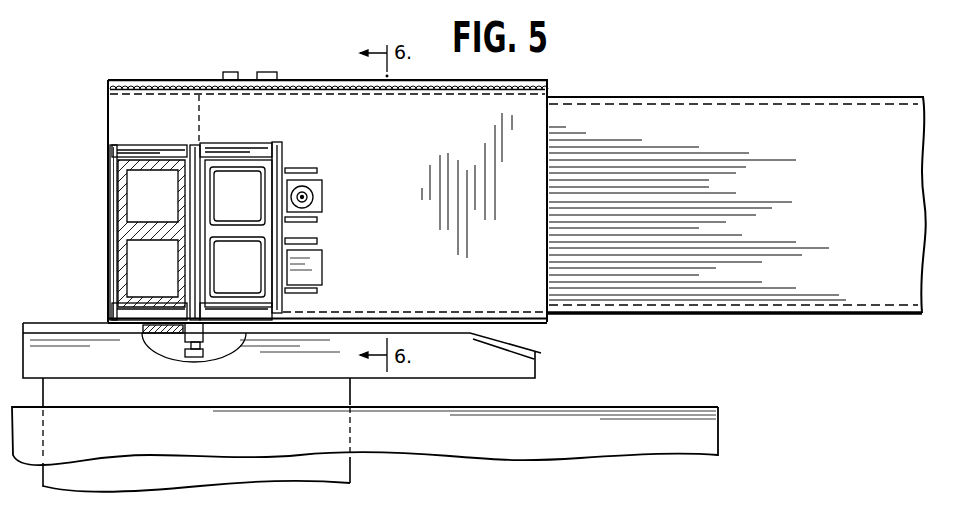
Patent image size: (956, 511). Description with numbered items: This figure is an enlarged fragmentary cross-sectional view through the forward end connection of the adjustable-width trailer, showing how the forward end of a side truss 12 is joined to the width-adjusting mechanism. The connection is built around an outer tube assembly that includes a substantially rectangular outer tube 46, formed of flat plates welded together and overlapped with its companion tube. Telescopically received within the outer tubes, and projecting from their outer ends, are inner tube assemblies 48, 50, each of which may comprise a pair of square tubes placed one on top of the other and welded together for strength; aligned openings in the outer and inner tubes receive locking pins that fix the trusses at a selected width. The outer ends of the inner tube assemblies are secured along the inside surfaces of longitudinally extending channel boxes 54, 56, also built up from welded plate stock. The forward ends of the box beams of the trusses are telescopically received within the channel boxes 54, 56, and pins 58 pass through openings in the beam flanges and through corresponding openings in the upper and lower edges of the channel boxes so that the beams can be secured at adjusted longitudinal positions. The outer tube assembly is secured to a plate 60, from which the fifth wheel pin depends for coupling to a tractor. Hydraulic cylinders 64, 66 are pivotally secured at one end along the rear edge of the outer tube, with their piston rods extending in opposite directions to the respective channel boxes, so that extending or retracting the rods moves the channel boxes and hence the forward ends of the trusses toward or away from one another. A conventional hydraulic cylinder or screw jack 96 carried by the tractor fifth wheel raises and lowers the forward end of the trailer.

The truss 12 is at (740, 96).
The outer tube 46 is at (134, 147).
The inner tube assembly 48 is at (289, 136).
The inner tube assembly 50 is at (116, 197).
The channel box 54 is at (163, 107).
The channel box 56 is at (524, 281).
The pin 58 is at (260, 71).
The plate 60 is at (228, 332).
The hydraulic cylinder 64 is at (322, 197).
The hydraulic cylinder 66 is at (322, 268).
The hydraulic cylinder or screw jack 96 is at (350, 430).